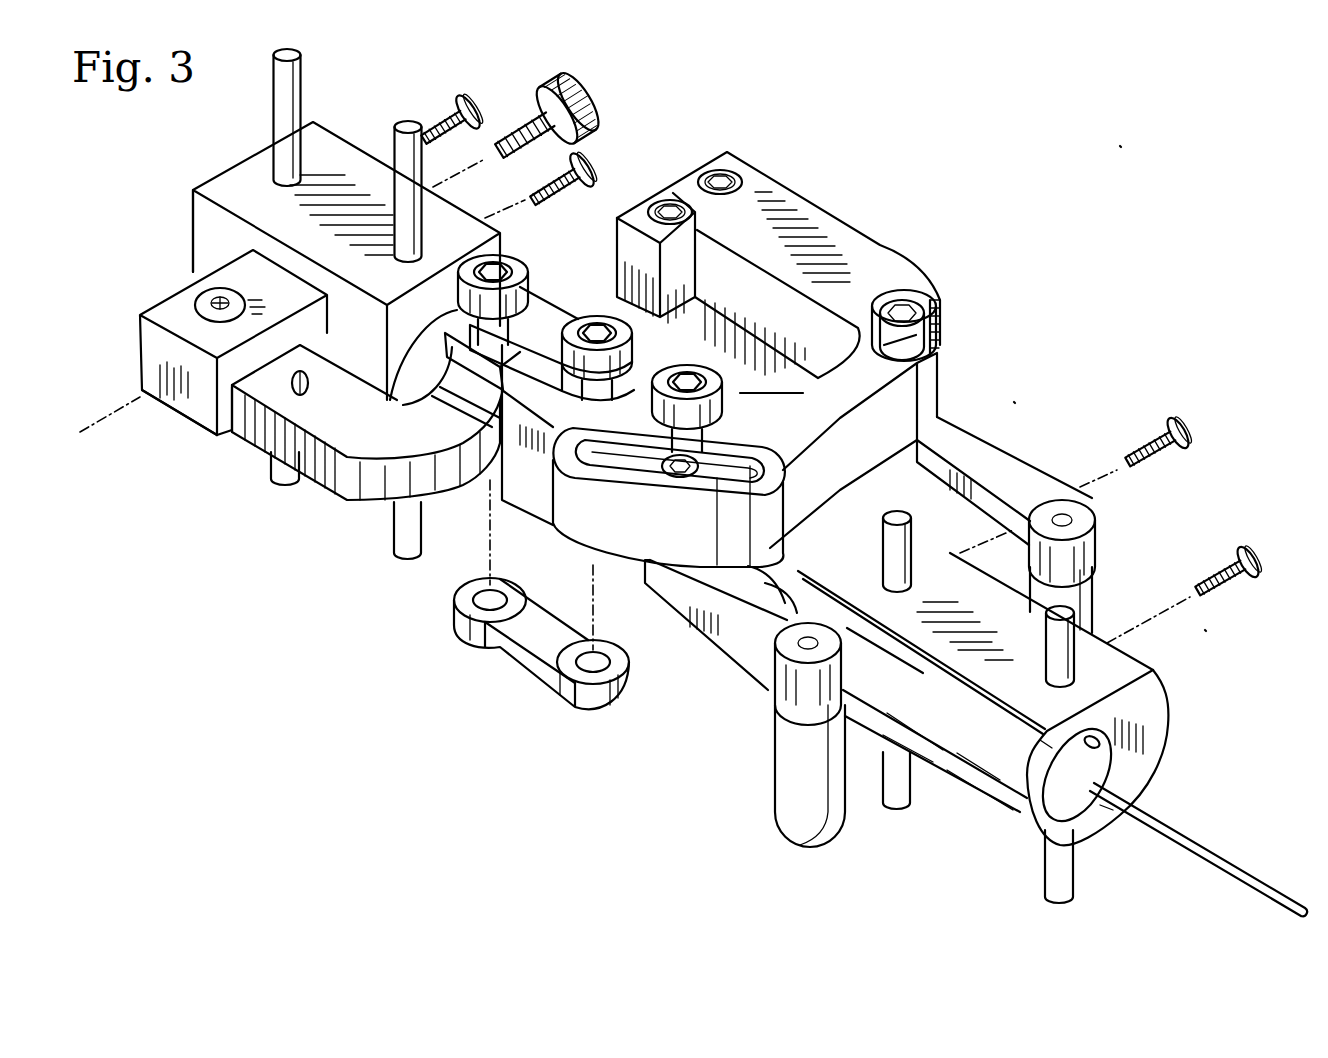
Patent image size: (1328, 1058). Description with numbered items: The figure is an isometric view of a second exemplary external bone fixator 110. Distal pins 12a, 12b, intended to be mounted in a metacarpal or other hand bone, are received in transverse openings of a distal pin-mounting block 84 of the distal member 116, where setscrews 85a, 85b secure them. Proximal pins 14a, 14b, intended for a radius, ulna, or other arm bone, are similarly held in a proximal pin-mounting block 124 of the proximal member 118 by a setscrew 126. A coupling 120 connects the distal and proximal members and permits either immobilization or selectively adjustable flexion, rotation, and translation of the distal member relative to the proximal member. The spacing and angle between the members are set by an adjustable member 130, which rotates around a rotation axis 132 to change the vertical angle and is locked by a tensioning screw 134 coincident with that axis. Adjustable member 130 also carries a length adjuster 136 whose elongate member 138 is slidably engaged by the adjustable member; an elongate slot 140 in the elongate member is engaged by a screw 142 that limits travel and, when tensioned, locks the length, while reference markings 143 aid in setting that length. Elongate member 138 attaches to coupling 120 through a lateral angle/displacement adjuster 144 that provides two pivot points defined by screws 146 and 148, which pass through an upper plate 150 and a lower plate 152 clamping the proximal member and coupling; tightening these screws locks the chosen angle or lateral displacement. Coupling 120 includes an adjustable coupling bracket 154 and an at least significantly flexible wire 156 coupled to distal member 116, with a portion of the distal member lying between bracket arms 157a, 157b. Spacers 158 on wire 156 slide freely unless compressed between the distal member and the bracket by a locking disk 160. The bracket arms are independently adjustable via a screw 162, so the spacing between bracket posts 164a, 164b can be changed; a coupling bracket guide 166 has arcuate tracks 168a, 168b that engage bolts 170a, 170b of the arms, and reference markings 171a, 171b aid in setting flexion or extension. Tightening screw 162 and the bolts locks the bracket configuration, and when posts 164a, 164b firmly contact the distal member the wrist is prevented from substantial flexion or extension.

The external bone fixator 110 is at (1118, 143).
The distal member 116 is at (1205, 628).
The proximal member 118 is at (182, 133).
The coupling 120 is at (850, 182).
The proximal pin-mounting block 124 is at (207, 185).
The setscrew 126 is at (468, 97).
The adjustable member 130 is at (183, 437).
The rotation axis 132 is at (98, 432).
The tensioning screw 134 is at (607, 102).
The length adjuster 136 is at (195, 457).
The elongate member 138 is at (345, 378).
The elongate slot 140 is at (294, 383).
The screw 142 is at (210, 304).
The reference markings 143 is at (258, 423).
The lateral angle/displacement adjuster 144 is at (575, 247).
The screw 146 is at (520, 273).
The screw 148 is at (578, 320).
The upper plate 150 is at (452, 312).
The lower plate 152 is at (593, 712).
The adjustable coupling bracket 154 is at (1012, 400).
The flexible wire 156 is at (1260, 873).
The bracket arm 157a is at (680, 600).
The bracket arm 157b is at (1023, 458).
The spacers 158 is at (767, 573).
The locking disk 160 is at (1057, 775).
The screw 162 is at (700, 376).
The bracket post 164a is at (832, 800).
The bracket post 164b is at (1087, 610).
The coupling bracket guide 166 is at (858, 476).
The arcuate track 168a is at (590, 447).
The arcuate track 168b is at (908, 292).
The bolt 170a is at (680, 470).
The bolt 170b is at (918, 312).
The reference markings 171a is at (597, 463).
The reference markings 171b is at (937, 338).
The distal pin 12a is at (913, 560).
The distal pin 12b is at (1112, 660).
The proximal pin 14a is at (303, 105).
The proximal pin 14b is at (390, 145).
The distal pin-mounting block 84 is at (1075, 645).
The setscrew 85a is at (1186, 420).
The setscrew 85b is at (1255, 548).